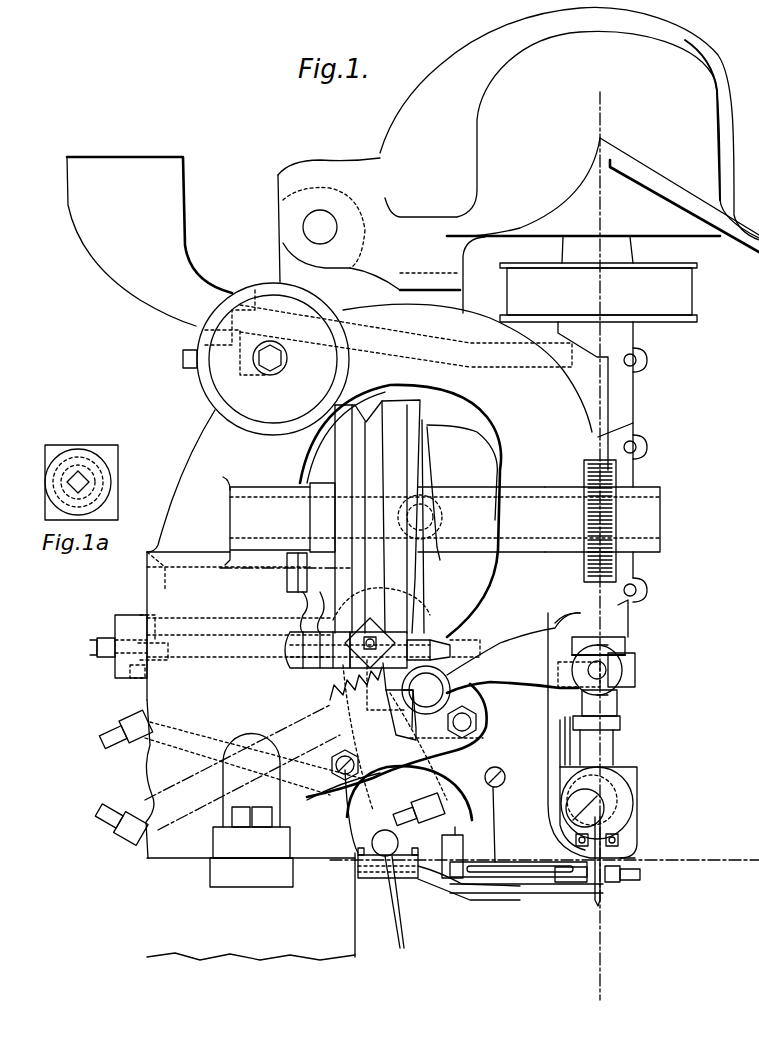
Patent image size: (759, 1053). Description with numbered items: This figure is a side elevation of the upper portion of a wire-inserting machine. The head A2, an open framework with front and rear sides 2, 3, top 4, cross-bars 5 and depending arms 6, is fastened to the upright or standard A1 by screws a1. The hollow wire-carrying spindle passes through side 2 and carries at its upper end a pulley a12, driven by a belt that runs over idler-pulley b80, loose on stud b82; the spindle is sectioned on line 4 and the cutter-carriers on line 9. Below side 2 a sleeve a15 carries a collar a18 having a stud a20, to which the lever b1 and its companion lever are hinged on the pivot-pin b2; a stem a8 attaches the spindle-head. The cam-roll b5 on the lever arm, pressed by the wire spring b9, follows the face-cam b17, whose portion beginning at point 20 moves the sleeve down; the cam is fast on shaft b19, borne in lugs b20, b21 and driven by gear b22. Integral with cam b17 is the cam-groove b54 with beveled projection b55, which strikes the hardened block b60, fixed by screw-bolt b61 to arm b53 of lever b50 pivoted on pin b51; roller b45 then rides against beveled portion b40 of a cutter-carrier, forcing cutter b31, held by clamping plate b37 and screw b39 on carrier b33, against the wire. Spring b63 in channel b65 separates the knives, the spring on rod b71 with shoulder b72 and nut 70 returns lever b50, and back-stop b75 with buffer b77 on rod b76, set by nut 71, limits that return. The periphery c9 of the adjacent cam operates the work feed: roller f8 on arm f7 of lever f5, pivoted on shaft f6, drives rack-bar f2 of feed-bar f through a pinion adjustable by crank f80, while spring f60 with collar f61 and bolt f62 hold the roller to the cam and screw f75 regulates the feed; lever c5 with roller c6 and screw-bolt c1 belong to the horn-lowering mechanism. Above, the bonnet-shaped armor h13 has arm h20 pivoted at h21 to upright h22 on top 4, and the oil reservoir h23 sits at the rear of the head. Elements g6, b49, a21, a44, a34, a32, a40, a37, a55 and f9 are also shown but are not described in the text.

In FIG. 1, the reservoir h23 is at (149, 241).
In FIG. 1, the pivot h21 is at (305, 224).
In FIG. 1, the lug or upright h22 is at (283, 262).
In FIG. 1, the lug or arm h20 is at (337, 262).
In FIG. 1, the armor h13 is at (569, 160).
In FIG. 1, the top 4 is at (598, 538).
In FIG. 1, the collar g6 is at (628, 245).
In FIG. 1, the pulley a12 is at (690, 292).
In FIG. 1, the front side 2 is at (620, 440).
In FIG. 1, the shaft b19 is at (660, 502).
In FIG. 1, the gear b22 is at (616, 565).
In FIG. 1, the lug or ear b20 is at (527, 487).
In FIG. 1, the lug or ear b21 is at (258, 487).
In FIG. 1, the bearing b49 is at (232, 503).
In FIG. 1, the cam-groove b54 is at (395, 482).
In FIG. 1, the projection b55 is at (372, 398).
In FIG. 1, the spring b9 is at (425, 444).
In FIG. 1, the cam b17 is at (432, 418).
In FIG. 1, the periphery c9 is at (343, 450).
In FIG. 1, the cam point 20 is at (430, 505).
In FIG. 1, the cam-roll b5 is at (442, 517).
In FIG. 1, the idler-pulley b80 is at (208, 396).
In FIG. 1, the shaft or stud b82 is at (271, 368).
In FIG. 1, the rear side 3 is at (180, 487).
In FIG. 1, the upright or standard A1 is at (150, 918).
In FIG. 1, the head A2 is at (147, 772).
In FIG. 1, the screw-bolt c1 is at (152, 562).
In FIG. 1, the spring f60 is at (145, 615).
In FIG. 1A, the spring f60 is at (60, 498).
In FIG. 1, the threaded bolt f62 is at (105, 640).
In FIG. 1A, the threaded bolt f62 is at (70, 482).
In FIG. 1, the adjusting-collar f61 is at (115, 665).
In FIG. 1A, the adjusting-collar f61 is at (58, 466).
In FIG. 1, the stud or roller c6 is at (305, 572).
In FIG. 1, the lever c5 is at (300, 605).
In FIG. 1, the arm f7 is at (312, 650).
In FIG. 1, the roller f8 is at (338, 663).
In FIG. 1, the beveled portion b40 is at (335, 692).
In FIG. 1, the pivot rod or shaft f6 is at (198, 659).
In FIG. 1, the screw-bolt b61 is at (377, 632).
In FIG. 1, the block b60 is at (372, 651).
In FIG. 1, the lever-arm b53 is at (393, 648).
In FIG. 1, the pivot-pin or shaft b2 is at (440, 682).
In FIG. 1, the lever or arm b1 is at (467, 698).
In FIG. 1, the stud, bolt, or pin b51 is at (478, 718).
In FIG. 1, the lever b50 is at (463, 760).
In FIG. 1, the block a21 is at (625, 648).
In FIG. 1, the stud a20 is at (607, 670).
In FIG. 1, the collar a18 is at (635, 678).
In FIG. 1, the sleeve a15 is at (617, 705).
In FIG. 1, the stem a8 is at (618, 738).
In FIG. 1, the bracket a44 is at (565, 723).
In FIG. 1, the head a34 is at (616, 807).
In FIG. 1, the gear a32 is at (596, 792).
In FIG. 1, the cutter or knife b31 is at (605, 822).
In FIG. 1, the screw a40 is at (618, 840).
In FIG. 1, the screw a37 is at (576, 840).
In FIG. 1, the clamping piece or plate b37 is at (598, 906).
In FIG. 1, the section line 9 is at (544, 857).
In FIG. 1, the bolt or screw b39 is at (633, 874).
In FIG. 1, the plate a55 is at (565, 893).
In FIG. 1, the cutter-carrier b33 is at (527, 877).
In FIG. 1, the groove or channel b65 is at (493, 893).
In FIG. 1, the bar f is at (450, 898).
In FIG. 1, the roller b45 is at (440, 880).
In FIG. 1, the spring b63 is at (496, 838).
In FIG. 1, the arm 6 is at (517, 798).
In FIG. 1, the buffer or cushion b77 is at (432, 805).
In FIG. 1, the back-stop b75 is at (438, 798).
In FIG. 1, the cross-bar 5 is at (392, 768).
In FIG. 1, the screw f75 is at (330, 765).
In FIG. 1, the lever f5 is at (252, 758).
In FIG. 1, the rod or bolt b71 is at (182, 818).
In FIG. 1, the rod b76 is at (183, 735).
In FIG. 1, the shoulder b72 is at (252, 740).
In FIG. 1, the bolt or screw a1 is at (235, 812).
In FIG. 1, the nut 71 is at (115, 742).
In FIG. 1, the nut 70 is at (120, 832).
In FIG. 1, the rack-bar f2 is at (356, 868).
In FIG. 1, the bracket f9 is at (388, 871).
In FIG. 1, the crank or handle f80 is at (395, 920).